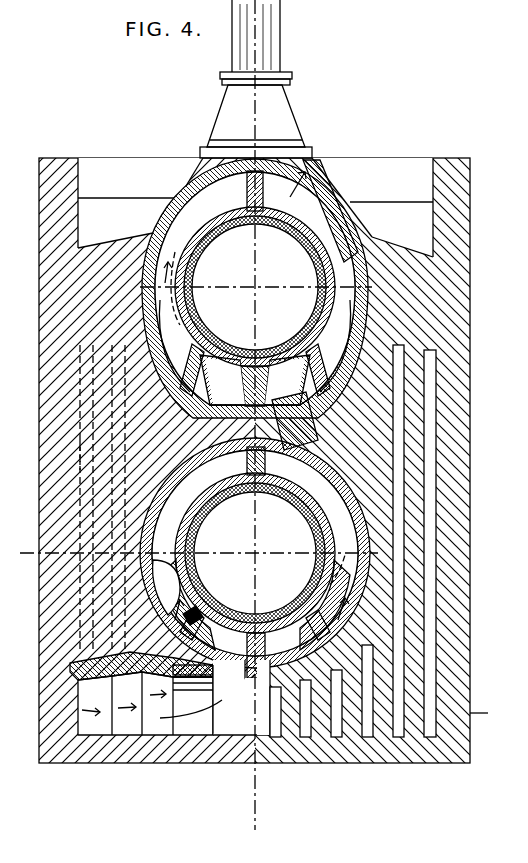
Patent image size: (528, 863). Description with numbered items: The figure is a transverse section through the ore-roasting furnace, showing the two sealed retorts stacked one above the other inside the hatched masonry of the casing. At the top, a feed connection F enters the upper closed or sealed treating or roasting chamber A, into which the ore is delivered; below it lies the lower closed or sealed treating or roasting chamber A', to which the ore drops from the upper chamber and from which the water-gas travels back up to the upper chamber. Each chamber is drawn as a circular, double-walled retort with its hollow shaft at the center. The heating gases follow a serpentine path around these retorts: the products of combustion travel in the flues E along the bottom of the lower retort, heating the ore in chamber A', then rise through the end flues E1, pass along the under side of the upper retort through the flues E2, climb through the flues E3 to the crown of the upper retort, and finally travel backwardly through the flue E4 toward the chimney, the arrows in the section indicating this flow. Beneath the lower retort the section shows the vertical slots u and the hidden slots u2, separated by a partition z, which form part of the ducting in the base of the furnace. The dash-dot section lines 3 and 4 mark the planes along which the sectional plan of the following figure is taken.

The inlet pipe F is at (281, 50).
The upper closed or sealed treating or roasting chamber A is at (255, 287).
The lower closed or sealed treating or roasting chamber A' is at (255, 553).
The flues E is at (190, 622).
The end flues E1 is at (310, 500).
The flues E2 is at (180, 373).
The flues E3 is at (171, 282).
The flue E4 is at (298, 176).
The outlet slots u is at (68, 440).
The hidden slots u2 is at (95, 455).
The partition z is at (222, 708).
The line 3 3 is at (329, 710).
The line 4 4 is at (192, 415).